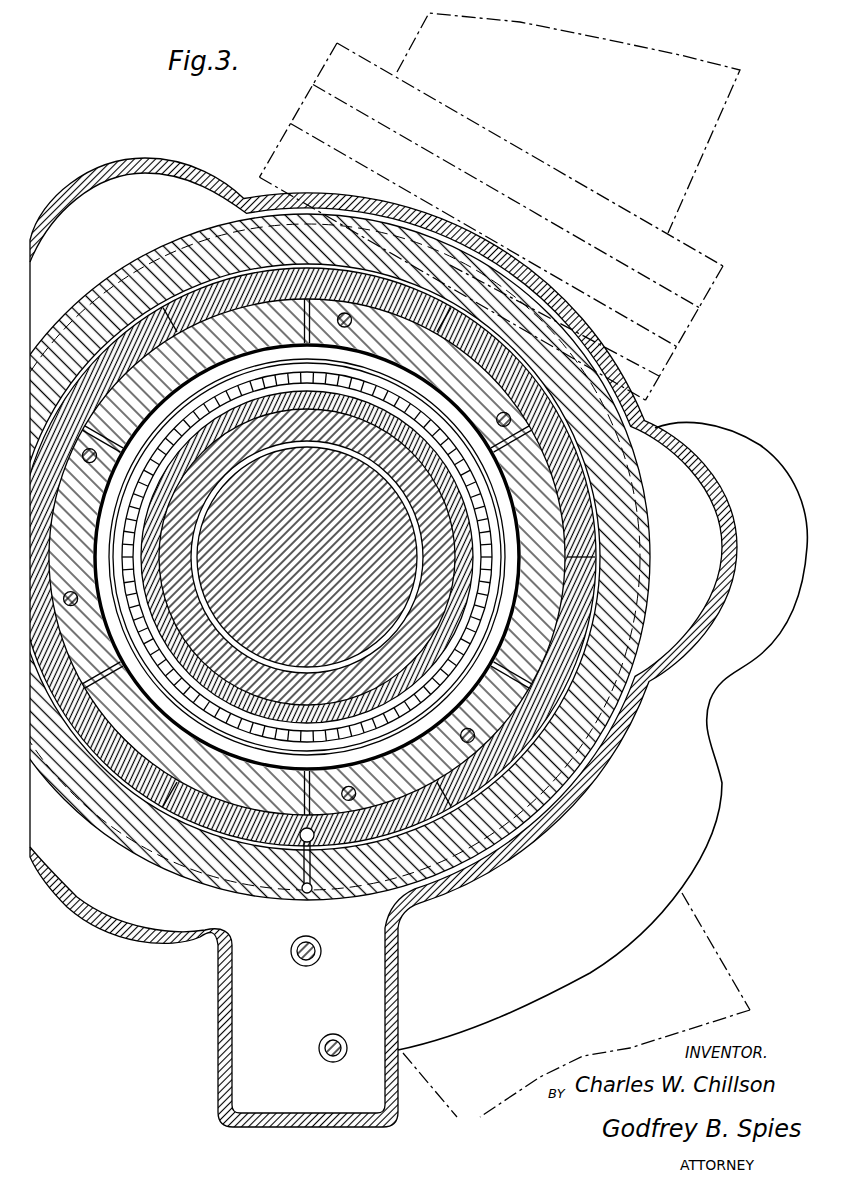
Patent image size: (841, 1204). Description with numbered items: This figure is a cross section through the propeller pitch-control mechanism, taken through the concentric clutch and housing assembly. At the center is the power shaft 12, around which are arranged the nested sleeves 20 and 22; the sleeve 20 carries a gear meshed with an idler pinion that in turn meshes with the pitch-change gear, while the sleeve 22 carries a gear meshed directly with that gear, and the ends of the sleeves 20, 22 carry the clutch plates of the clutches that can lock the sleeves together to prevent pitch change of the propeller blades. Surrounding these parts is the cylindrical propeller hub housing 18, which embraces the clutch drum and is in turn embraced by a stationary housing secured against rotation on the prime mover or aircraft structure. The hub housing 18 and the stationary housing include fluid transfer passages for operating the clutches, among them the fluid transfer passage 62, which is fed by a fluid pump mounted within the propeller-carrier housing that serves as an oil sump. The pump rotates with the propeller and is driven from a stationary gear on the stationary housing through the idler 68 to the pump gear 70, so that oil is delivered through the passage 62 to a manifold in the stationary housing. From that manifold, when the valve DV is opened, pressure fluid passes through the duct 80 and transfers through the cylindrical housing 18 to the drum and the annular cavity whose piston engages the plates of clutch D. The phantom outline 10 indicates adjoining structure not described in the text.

The conduit 10 is at (706, 155).
The power shaft 12 is at (307, 557).
The propeller hub housing 18 is at (573, 495).
The sleeve 20 is at (472, 555).
The sleeve 22 is at (455, 597).
The fluid transfer passage 62 is at (302, 872).
The idler 68 is at (315, 958).
The pump gear 70 is at (326, 1040).
The duct 80 is at (312, 843).